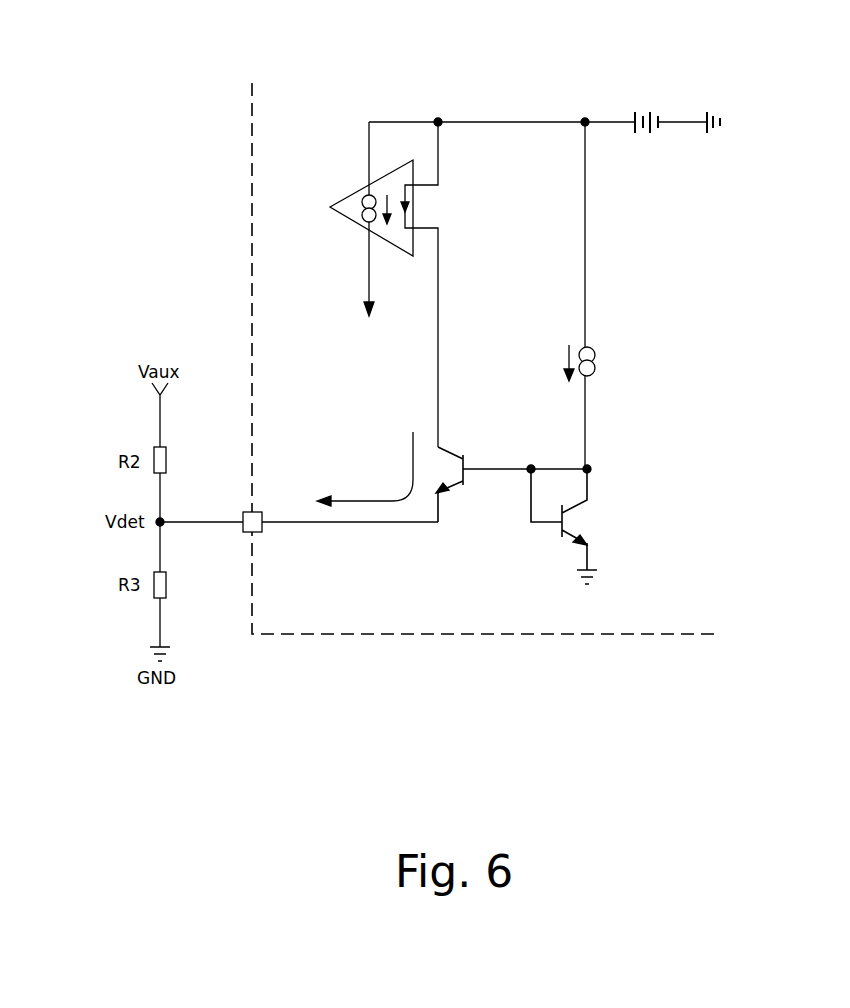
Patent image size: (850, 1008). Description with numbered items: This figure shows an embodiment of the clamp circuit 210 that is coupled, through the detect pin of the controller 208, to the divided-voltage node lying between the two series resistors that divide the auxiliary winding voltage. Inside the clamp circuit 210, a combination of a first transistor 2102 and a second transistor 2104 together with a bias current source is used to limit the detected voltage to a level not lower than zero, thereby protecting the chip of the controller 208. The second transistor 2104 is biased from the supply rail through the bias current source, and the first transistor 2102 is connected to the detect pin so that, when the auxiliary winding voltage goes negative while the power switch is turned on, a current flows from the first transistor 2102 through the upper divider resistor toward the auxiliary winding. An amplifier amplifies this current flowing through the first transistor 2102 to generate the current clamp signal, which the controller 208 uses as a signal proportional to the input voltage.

The controller 208 is at (252, 208).
The clamp circuit 210 is at (491, 320).
The transistor 2102 is at (463, 442).
The transistor 2104 is at (607, 508).